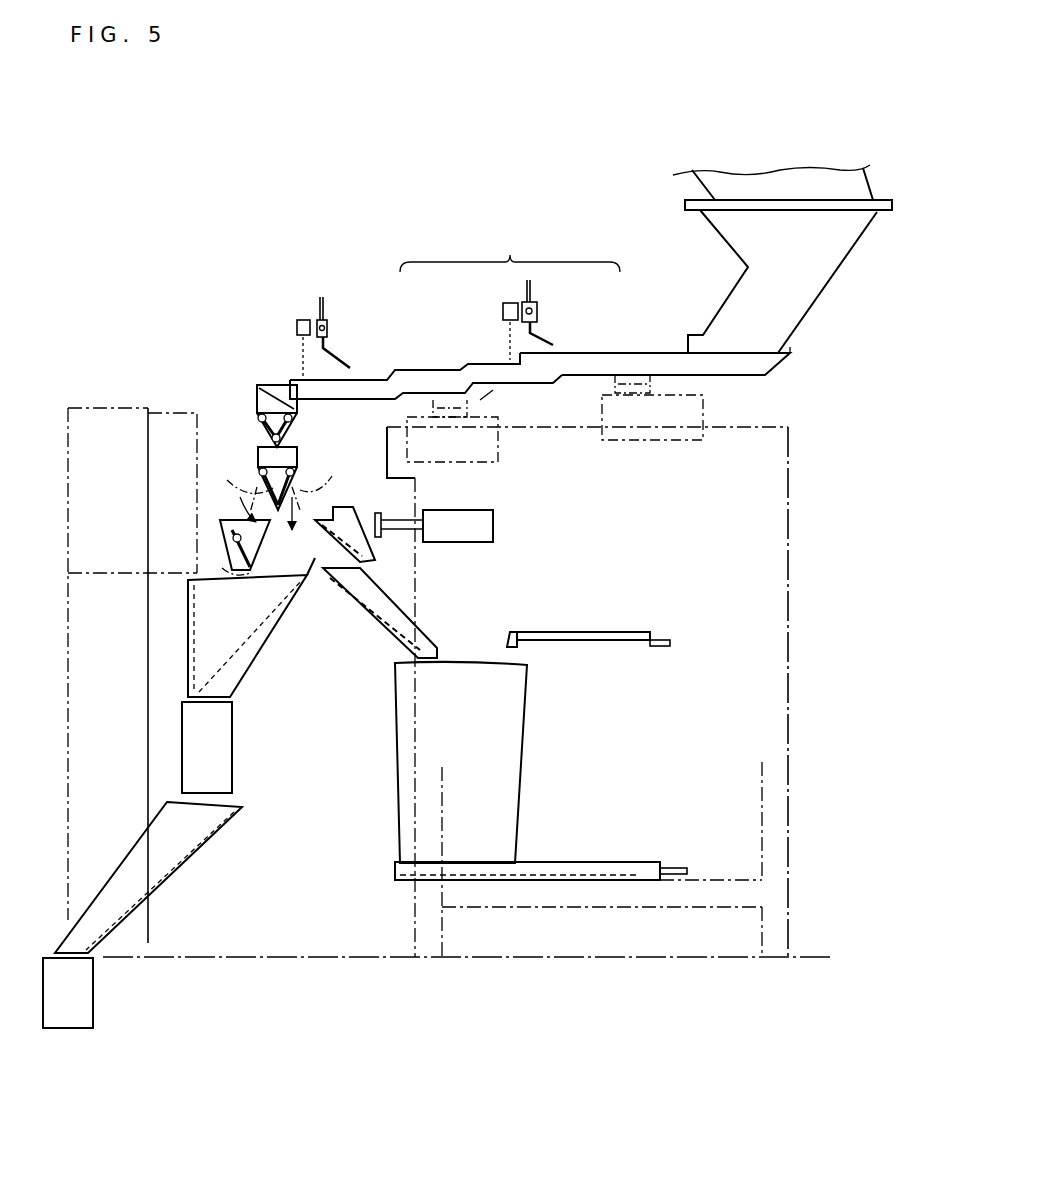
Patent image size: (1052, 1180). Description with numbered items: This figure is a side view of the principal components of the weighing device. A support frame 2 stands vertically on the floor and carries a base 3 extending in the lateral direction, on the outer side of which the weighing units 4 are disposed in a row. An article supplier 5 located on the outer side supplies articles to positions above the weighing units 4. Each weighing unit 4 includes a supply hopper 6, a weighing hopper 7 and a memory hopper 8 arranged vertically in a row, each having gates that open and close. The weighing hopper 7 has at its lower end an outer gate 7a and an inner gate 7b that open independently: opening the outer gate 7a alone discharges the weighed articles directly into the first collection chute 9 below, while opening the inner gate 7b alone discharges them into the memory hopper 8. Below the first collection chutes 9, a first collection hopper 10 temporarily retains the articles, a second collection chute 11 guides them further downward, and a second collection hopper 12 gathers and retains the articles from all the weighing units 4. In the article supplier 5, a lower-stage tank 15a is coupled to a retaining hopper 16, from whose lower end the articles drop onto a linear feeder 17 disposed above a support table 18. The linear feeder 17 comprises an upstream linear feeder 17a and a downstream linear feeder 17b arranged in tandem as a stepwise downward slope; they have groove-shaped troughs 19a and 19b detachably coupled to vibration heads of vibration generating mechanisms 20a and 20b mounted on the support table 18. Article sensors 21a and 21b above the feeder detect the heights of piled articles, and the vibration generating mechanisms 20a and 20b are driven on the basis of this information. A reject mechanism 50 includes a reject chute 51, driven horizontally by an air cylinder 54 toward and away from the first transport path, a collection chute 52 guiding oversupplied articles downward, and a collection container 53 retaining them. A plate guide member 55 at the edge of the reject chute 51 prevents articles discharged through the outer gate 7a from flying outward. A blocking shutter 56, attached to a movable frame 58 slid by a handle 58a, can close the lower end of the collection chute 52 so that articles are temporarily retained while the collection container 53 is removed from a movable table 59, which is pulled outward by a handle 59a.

The support frame 2 is at (152, 660).
The base 3 is at (90, 406).
The weighing unit 4 is at (241, 422).
The article supplier 5 is at (398, 240).
The supply hopper 6 is at (268, 384).
The weighing hopper 7 is at (258, 456).
The outer gate 7a is at (308, 509).
The inner gate 7b is at (239, 488).
The memory hopper 8 is at (218, 527).
The first collection chute 9 is at (265, 640).
The first collection hopper 10 is at (232, 736).
The second collection chute 11 is at (185, 858).
The second collection hopper 12 is at (93, 993).
The lower-stage tank 15a is at (690, 178).
The retaining hopper 16 is at (712, 313).
The linear feeder 17 is at (510, 249).
The upstream linear feeder 17a is at (626, 349).
The downstream linear feeder 17b is at (405, 374).
The support table 18 is at (790, 590).
The trough 19a is at (740, 375).
The trough 19b is at (360, 396).
The vibration generating mechanism 20a is at (700, 440).
The vibration generating mechanism 20b is at (500, 450).
The article sensor 21a is at (503, 312).
The article sensor 21b is at (297, 326).
The reject mechanism 50 is at (394, 560).
The reject chute 51 is at (345, 507).
The collection chute 52 is at (378, 620).
The collection container 53 is at (521, 762).
The air cylinder 54 is at (469, 510).
The guide member 55 is at (313, 560).
The blocking shutter 56 is at (497, 640).
The movable frame 58 is at (593, 631).
The handle 58a is at (665, 638).
The movable table 59 is at (592, 861).
The handle 59a is at (677, 866).